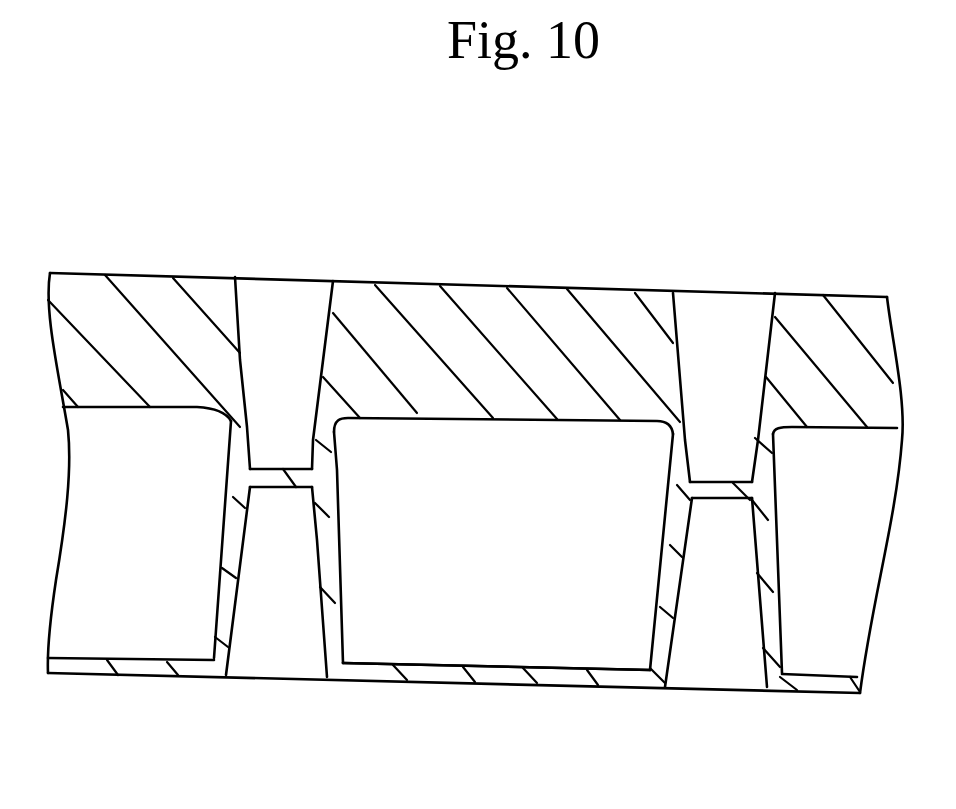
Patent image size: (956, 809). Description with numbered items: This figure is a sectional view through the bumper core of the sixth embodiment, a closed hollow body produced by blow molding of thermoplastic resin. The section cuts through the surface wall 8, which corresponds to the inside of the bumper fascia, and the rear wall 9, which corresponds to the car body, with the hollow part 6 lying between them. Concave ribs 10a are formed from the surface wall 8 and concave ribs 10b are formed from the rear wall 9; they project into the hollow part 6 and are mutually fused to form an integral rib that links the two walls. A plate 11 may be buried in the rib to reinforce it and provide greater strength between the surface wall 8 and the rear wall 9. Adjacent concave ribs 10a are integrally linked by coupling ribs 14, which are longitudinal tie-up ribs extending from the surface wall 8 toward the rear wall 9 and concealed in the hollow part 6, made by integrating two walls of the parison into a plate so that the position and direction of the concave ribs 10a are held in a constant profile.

The surface wall 8 is at (540, 287).
The coupling rib 14 is at (455, 337).
The concave rib 10a is at (243, 380).
The concave rib 10b is at (240, 553).
The plate 11 is at (273, 468).
The rear wall 9 is at (507, 683).
The hollow part 6 is at (440, 580).